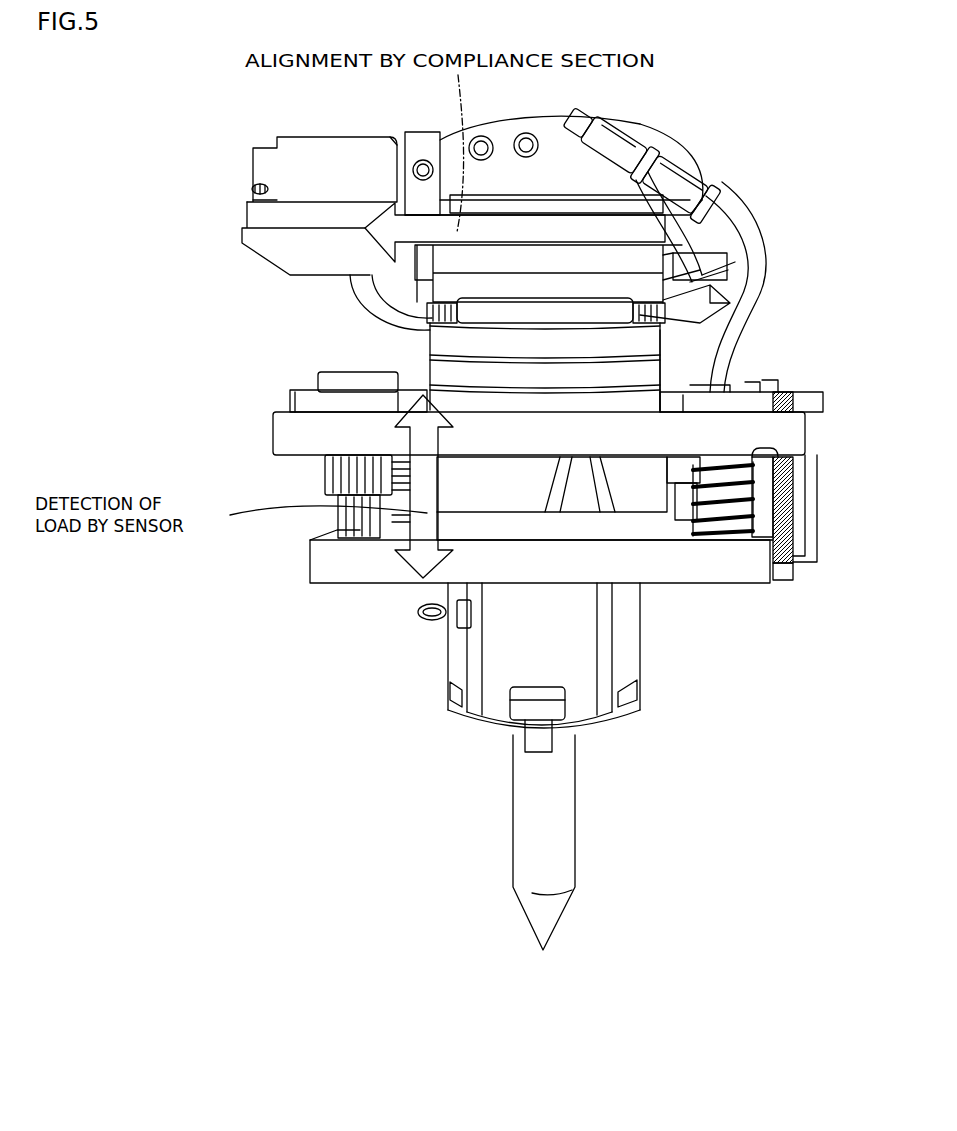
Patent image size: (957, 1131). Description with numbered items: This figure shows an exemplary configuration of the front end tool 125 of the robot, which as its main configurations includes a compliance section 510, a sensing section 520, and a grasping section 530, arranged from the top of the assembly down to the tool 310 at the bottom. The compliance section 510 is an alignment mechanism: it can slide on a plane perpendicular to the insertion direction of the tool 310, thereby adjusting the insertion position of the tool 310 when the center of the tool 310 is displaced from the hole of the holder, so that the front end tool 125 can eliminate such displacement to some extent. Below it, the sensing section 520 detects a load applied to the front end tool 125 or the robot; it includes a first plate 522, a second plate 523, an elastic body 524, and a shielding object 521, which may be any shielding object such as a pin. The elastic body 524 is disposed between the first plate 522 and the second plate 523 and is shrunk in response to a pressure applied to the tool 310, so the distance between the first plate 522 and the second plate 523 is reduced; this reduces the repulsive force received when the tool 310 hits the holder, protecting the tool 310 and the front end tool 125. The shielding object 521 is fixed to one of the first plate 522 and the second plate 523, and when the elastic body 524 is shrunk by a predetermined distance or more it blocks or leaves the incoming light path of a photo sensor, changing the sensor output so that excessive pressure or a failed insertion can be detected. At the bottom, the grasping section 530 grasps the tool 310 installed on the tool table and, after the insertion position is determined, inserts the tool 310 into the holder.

The front end tool 125 is at (791, 65).
The compliance section 510 is at (847, 112).
The sensing section 520 is at (847, 376).
The grasping section 530 is at (847, 604).
The first plate 522 is at (290, 435).
The second plate 523 is at (330, 566).
The elastic body 524 is at (745, 520).
The shielding object 521 is at (785, 582).
The tool 310 is at (512, 877).